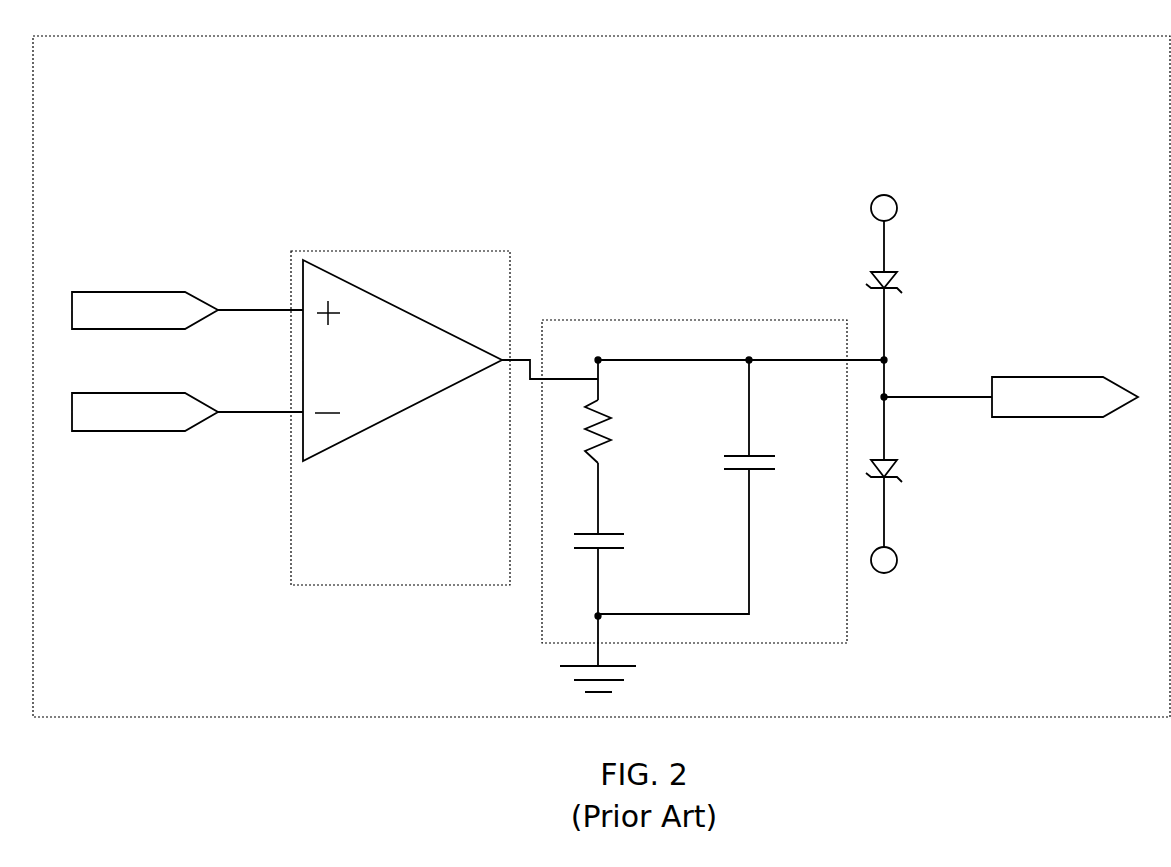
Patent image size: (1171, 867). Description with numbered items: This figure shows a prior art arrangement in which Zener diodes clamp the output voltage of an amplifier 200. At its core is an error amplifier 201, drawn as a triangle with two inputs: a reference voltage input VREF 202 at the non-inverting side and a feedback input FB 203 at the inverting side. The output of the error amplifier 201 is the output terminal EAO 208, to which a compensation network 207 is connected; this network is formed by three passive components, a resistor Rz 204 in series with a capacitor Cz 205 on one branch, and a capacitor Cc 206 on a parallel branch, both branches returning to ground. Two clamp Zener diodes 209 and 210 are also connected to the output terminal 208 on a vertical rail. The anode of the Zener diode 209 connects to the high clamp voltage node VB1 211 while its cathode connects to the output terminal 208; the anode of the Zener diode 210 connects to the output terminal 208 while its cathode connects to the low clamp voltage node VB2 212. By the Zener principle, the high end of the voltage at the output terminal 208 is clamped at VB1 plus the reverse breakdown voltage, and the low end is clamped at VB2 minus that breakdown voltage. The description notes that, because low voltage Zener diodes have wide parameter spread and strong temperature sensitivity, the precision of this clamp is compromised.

The amplifier 200 is at (611, 110).
The error amplifier 201 is at (384, 548).
The VREF input 202 is at (120, 286).
The FB input 203 is at (129, 440).
The resistor Rz 204 is at (653, 461).
The capacitor Cz 205 is at (663, 561).
The capacitor Cc 206 is at (817, 483).
The compensation network 207 is at (541, 643).
The output terminal EAO 208 is at (1101, 428).
The zener diode 209 is at (944, 311).
The zener diode 210 is at (944, 503).
The high clamp voltage node VB1 211 is at (907, 205).
The low clamp voltage node VB2 212 is at (905, 568).